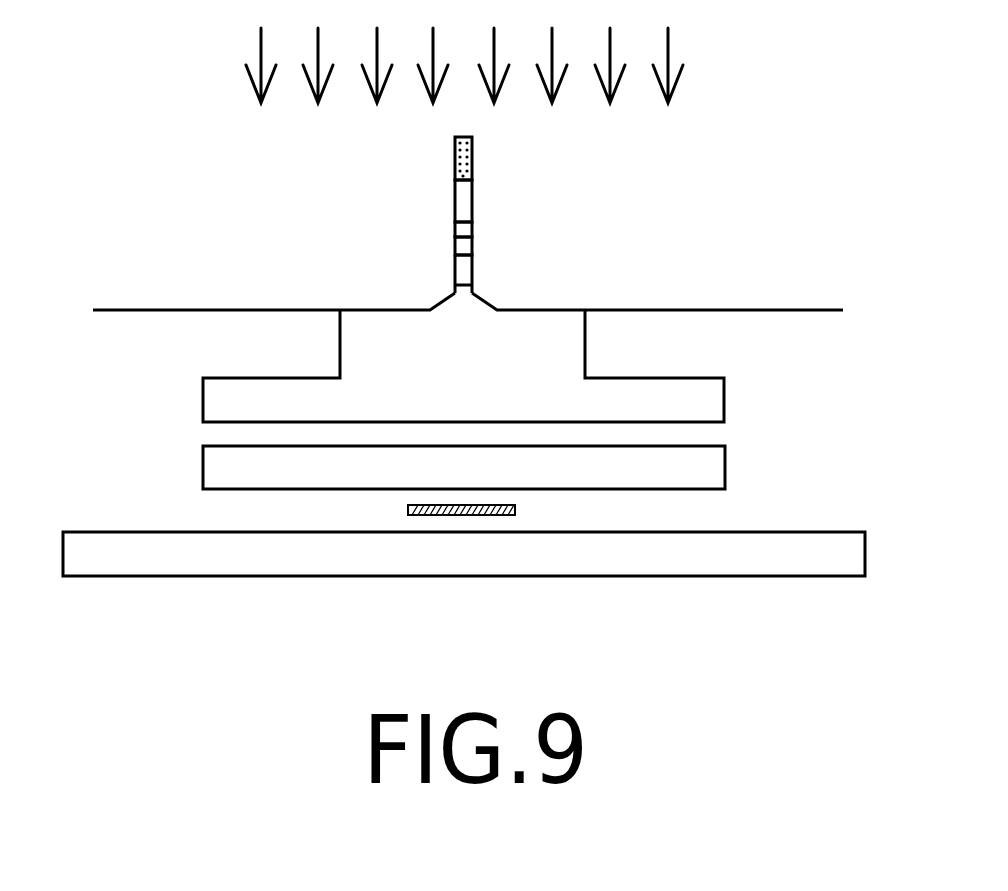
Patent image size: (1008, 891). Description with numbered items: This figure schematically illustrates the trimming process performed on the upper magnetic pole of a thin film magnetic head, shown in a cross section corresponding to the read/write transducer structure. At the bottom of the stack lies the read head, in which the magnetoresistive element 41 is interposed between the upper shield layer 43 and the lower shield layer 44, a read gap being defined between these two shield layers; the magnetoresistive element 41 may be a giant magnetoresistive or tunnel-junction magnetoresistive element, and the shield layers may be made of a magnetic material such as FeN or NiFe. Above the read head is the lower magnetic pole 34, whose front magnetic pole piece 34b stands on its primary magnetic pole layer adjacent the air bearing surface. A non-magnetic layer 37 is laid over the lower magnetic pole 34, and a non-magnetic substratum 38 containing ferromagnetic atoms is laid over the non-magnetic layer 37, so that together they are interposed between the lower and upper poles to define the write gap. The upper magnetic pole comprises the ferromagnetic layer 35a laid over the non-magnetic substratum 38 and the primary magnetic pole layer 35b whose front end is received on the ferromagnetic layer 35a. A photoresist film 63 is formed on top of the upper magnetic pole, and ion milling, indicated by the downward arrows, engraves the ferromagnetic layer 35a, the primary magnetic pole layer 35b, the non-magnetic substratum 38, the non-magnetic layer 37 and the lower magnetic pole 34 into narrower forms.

The lower magnetic pole 34 is at (725, 396).
The front magnetic pole piece 34b is at (355, 311).
The ferromagnetic layer 35a is at (472, 228).
The primary magnetic pole layer 35b is at (456, 196).
The non-magnetic layer 37 is at (472, 273).
The non-magnetic substratum 38 is at (455, 246).
The magnetoresistive element 41 is at (407, 512).
The upper shield layer 43 is at (203, 468).
The lower shield layer 44 is at (125, 576).
The photoresist film 63 is at (472, 147).